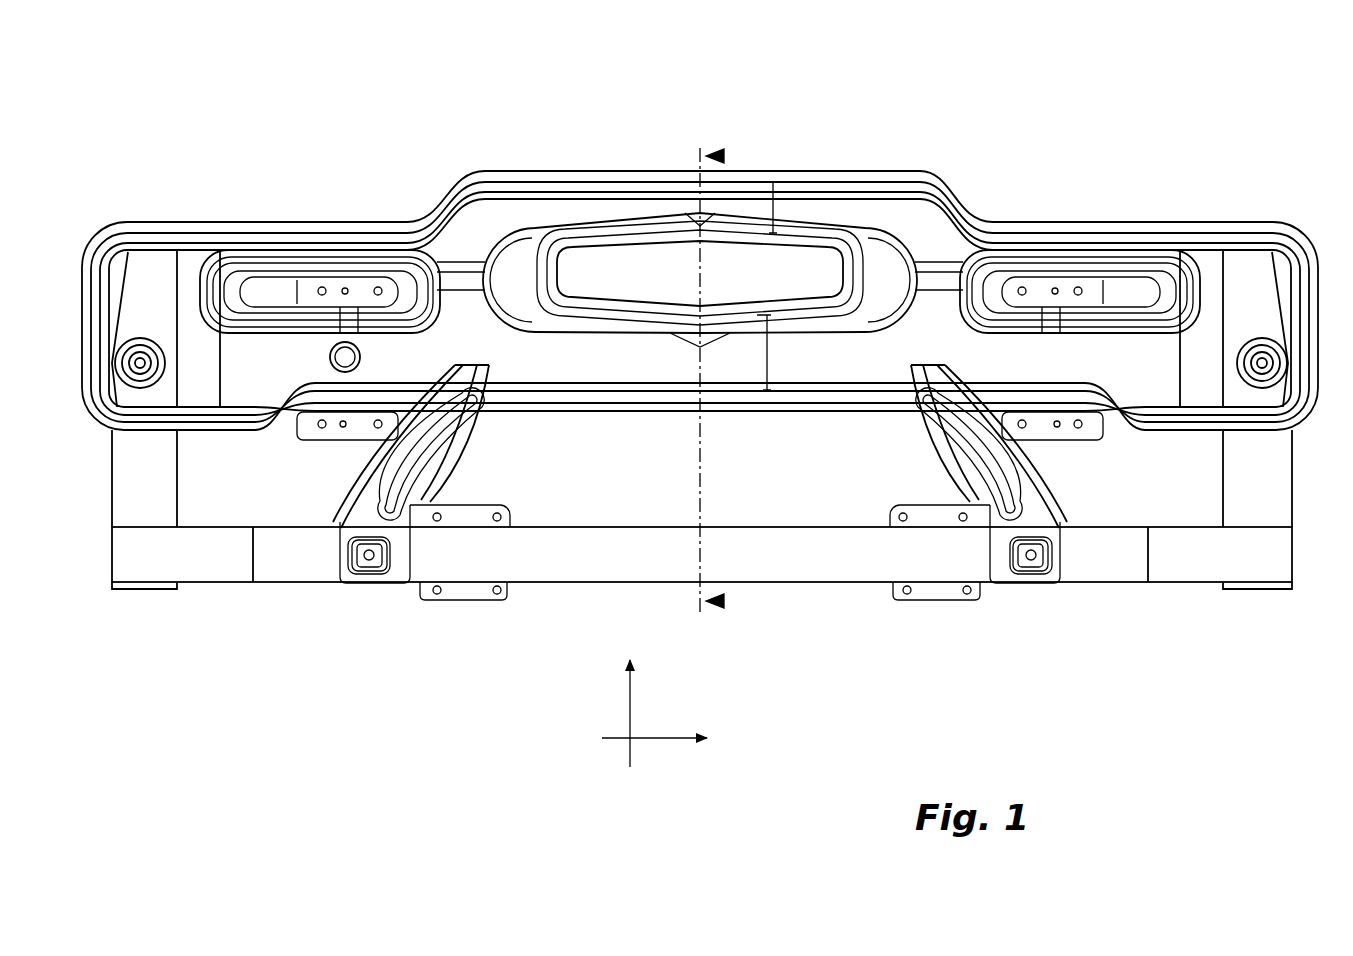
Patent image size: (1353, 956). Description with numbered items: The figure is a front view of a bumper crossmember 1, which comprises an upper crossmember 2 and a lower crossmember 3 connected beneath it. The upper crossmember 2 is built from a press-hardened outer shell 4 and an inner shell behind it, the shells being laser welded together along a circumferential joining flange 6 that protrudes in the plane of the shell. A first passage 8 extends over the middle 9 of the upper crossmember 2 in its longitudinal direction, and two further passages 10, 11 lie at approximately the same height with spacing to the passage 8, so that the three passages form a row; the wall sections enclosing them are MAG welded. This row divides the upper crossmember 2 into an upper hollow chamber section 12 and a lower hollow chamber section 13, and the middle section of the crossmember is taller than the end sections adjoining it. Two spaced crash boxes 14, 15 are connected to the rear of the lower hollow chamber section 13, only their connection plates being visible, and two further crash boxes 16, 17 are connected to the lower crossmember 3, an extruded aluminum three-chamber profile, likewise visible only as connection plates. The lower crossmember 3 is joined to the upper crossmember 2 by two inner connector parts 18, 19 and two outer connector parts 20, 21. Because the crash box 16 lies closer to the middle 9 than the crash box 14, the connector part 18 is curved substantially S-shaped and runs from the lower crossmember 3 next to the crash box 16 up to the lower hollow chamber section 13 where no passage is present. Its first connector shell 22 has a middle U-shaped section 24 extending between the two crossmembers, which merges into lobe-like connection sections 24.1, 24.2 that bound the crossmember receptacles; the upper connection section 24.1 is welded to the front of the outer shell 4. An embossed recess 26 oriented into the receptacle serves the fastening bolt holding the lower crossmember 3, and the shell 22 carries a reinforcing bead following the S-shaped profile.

The bumper crossmember 1 is at (940, 147).
The upper crossmember 2 is at (144, 212).
The lower crossmember 3 is at (268, 588).
The outer shell 4 is at (557, 370).
The joining flange 6 is at (214, 221).
The first passage 8 is at (673, 286).
The middle 9 is at (713, 268).
The further passage 10 is at (264, 284).
The further passage 11 is at (1130, 286).
The upper hollow chamber section 12 is at (773, 217).
The lower hollow chamber section 13 is at (767, 360).
The crash box 14 is at (310, 301).
The crash box 15 is at (1036, 293).
The crash box 16 is at (488, 593).
The crash box 17 is at (903, 591).
The inner connector part 18 is at (326, 488).
The inner connector part 19 is at (1062, 473).
The outer connector part 20 is at (161, 494).
The outer connector part 21 is at (1277, 484).
The first connector shell 22 is at (470, 418).
The U-shaped section 24 is at (460, 458).
The upper connection section 24.1 is at (440, 370).
The lower connection section 24.2 is at (420, 556).
The embossed recess 26 is at (366, 575).